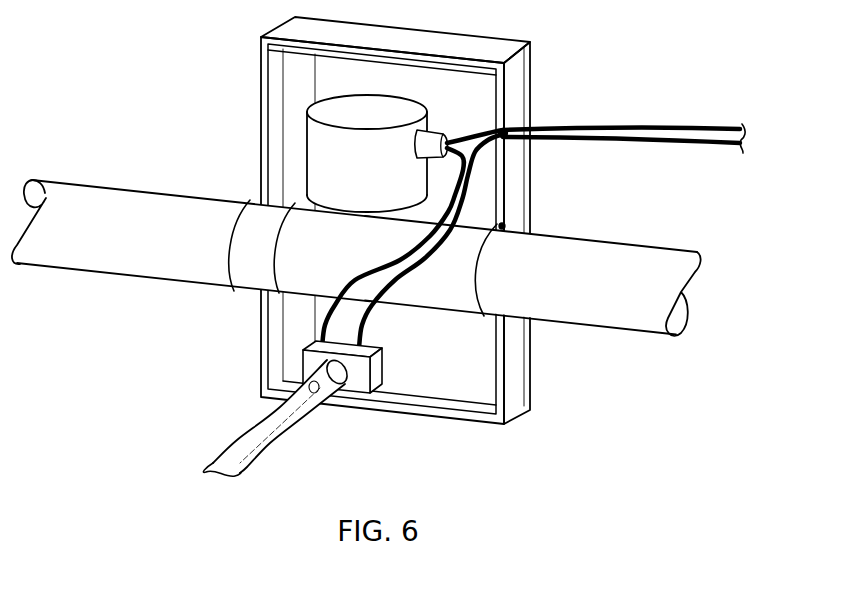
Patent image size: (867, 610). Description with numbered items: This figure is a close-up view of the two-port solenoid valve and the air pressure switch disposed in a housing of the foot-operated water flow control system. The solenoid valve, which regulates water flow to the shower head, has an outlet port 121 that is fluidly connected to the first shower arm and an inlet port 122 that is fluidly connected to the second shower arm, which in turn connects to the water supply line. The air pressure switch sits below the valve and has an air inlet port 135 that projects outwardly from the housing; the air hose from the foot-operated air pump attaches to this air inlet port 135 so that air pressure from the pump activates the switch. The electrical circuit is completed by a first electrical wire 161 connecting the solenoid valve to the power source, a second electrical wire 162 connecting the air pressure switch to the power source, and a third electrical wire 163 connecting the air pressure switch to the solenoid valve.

The outlet port 121 is at (256, 201).
The inlet port 122 is at (470, 312).
The air inlet port 135 is at (327, 362).
The first electrical wire 161 is at (650, 127).
The second electrical wire 162 is at (667, 145).
The third electrical wire 163 is at (323, 318).